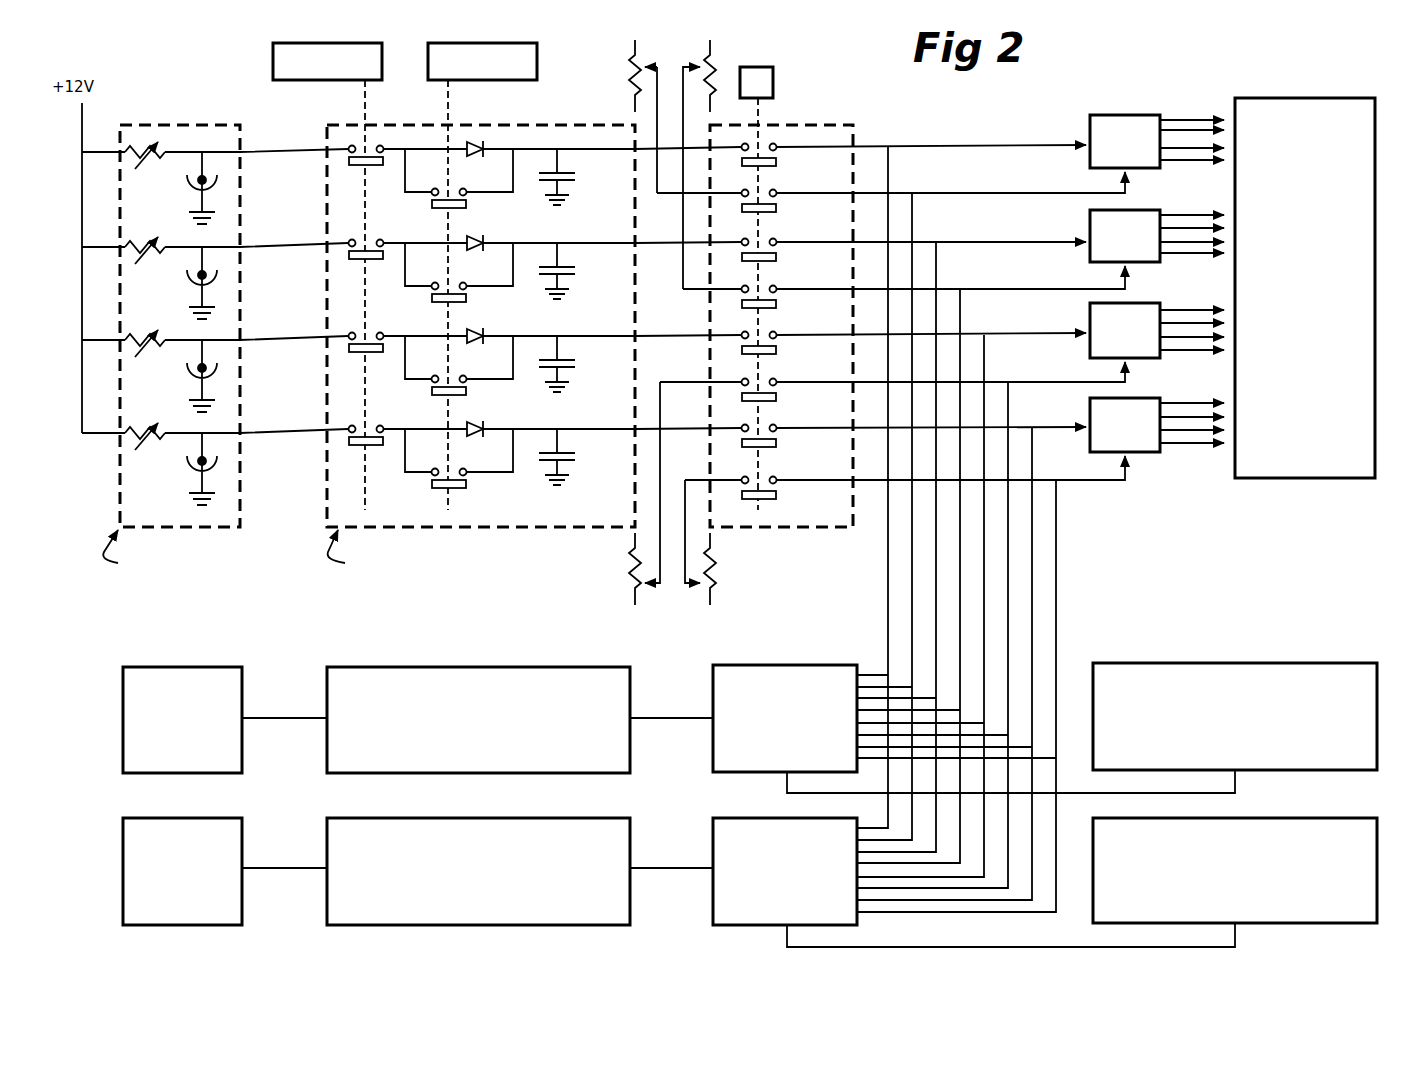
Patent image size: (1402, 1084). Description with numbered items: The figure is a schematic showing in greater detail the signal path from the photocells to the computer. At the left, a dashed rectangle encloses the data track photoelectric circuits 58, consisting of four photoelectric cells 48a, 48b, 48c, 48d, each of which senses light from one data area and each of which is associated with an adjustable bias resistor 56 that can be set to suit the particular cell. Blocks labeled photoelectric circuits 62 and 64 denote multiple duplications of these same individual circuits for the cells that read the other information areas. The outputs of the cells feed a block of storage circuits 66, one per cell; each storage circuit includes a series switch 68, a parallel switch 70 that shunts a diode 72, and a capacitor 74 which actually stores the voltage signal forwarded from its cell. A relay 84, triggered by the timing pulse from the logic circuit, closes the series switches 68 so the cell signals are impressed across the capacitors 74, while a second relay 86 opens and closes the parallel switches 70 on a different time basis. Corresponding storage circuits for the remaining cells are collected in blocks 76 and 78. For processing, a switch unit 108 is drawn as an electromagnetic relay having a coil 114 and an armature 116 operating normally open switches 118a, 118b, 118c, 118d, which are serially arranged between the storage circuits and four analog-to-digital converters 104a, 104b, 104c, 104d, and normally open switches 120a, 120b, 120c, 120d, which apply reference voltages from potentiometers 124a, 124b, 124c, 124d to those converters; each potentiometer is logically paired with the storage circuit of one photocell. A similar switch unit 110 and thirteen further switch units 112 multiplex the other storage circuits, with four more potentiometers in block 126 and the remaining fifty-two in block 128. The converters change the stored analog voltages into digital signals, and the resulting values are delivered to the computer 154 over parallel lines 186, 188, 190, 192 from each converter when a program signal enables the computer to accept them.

The photoelectric cell 48a is at (188, 190).
The photoelectric cell 48b is at (188, 285).
The photoelectric cell 48c is at (188, 378).
The photoelectric cell 48d is at (188, 472).
The adjustable bias resistor 56 is at (145, 308).
The data track photoelectric circuits 58 is at (180, 125).
The photoelectric circuits 62 is at (197, 667).
The photoelectric circuits 64 is at (235, 818).
The storage circuits block 66 is at (430, 125).
The series switch 68 is at (348, 152).
The parallel switch 70 is at (432, 196).
The diode 72 is at (475, 143).
The capacitor 74 is at (576, 181).
The storage circuits block 76 is at (430, 667).
The storage circuits block 78 is at (492, 818).
The relay 84 is at (273, 65).
The second relay 86 is at (537, 62).
The analog-to-digital converter 104a is at (1090, 118).
The analog-to-digital converter 104b is at (1090, 220).
The analog-to-digital converter 104c is at (1090, 318).
The analog-to-digital converter 104d is at (1090, 410).
The switch unit 108 is at (840, 125).
The switch unit 110 is at (785, 665).
The switch units 112 is at (713, 918).
The coil 114 is at (773, 80).
The armature 116 is at (762, 108).
The normally open switch 118a is at (777, 151).
The normally open switch 118b is at (777, 246).
The normally open switch 118c is at (777, 339).
The normally open switch 118d is at (777, 432).
The normally open switch 120a is at (777, 197).
The normally open switch 120b is at (777, 293).
The normally open switch 120c is at (777, 386).
The normally open switch 120d is at (777, 484).
The voltage reference potentiometer 124a is at (632, 53).
The voltage reference potentiometer 124b is at (714, 52).
The voltage reference potentiometer 124c is at (630, 595).
The voltage reference potentiometer 124d is at (722, 573).
The reference voltages block 126 is at (1237, 663).
The reference voltages block 128 is at (1290, 818).
The computer 154 is at (1307, 478).
The parallel line 186 is at (1176, 120).
The parallel line 188 is at (1193, 130).
The parallel line 190 is at (1178, 150).
The parallel line 192 is at (1200, 160).